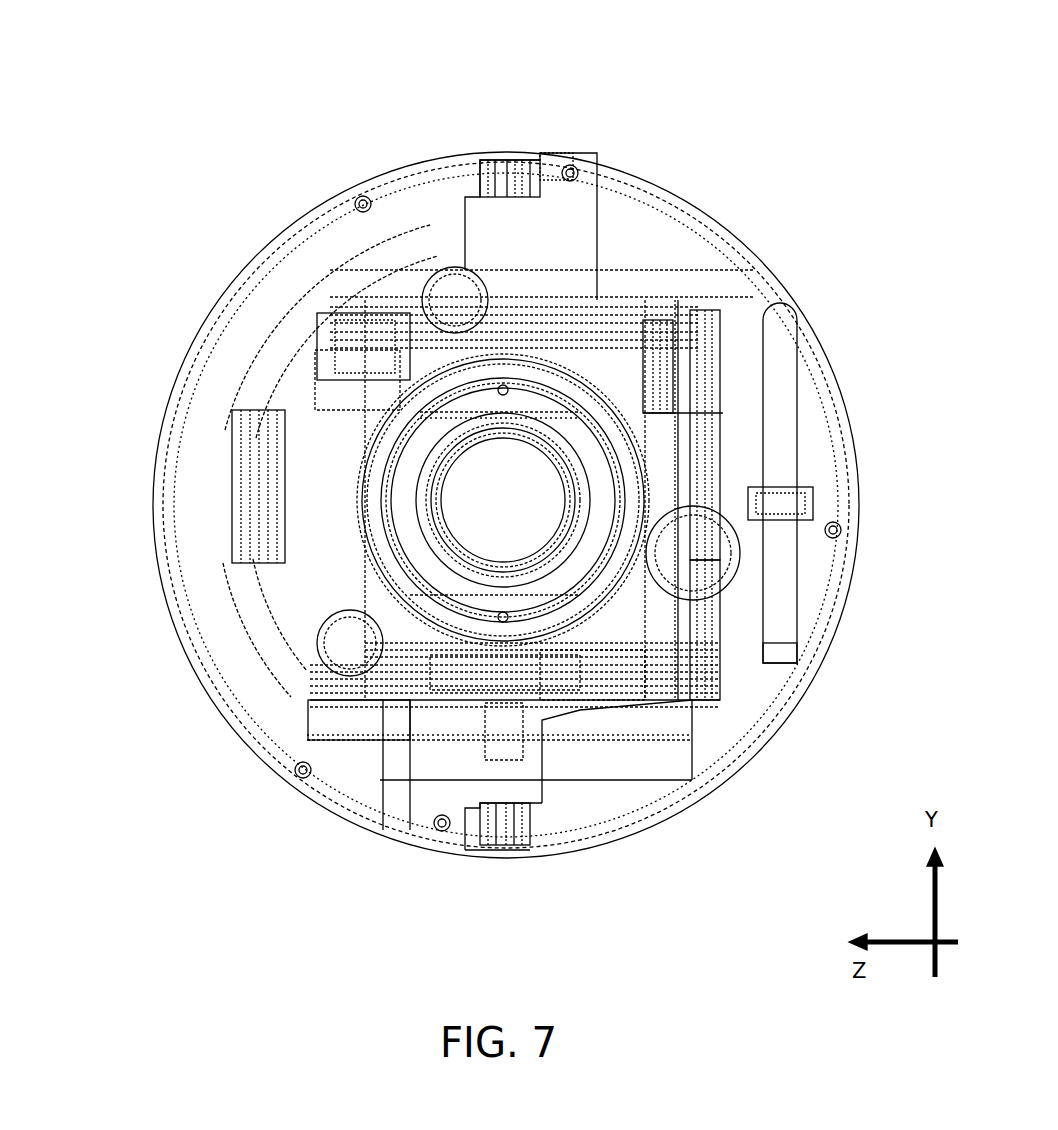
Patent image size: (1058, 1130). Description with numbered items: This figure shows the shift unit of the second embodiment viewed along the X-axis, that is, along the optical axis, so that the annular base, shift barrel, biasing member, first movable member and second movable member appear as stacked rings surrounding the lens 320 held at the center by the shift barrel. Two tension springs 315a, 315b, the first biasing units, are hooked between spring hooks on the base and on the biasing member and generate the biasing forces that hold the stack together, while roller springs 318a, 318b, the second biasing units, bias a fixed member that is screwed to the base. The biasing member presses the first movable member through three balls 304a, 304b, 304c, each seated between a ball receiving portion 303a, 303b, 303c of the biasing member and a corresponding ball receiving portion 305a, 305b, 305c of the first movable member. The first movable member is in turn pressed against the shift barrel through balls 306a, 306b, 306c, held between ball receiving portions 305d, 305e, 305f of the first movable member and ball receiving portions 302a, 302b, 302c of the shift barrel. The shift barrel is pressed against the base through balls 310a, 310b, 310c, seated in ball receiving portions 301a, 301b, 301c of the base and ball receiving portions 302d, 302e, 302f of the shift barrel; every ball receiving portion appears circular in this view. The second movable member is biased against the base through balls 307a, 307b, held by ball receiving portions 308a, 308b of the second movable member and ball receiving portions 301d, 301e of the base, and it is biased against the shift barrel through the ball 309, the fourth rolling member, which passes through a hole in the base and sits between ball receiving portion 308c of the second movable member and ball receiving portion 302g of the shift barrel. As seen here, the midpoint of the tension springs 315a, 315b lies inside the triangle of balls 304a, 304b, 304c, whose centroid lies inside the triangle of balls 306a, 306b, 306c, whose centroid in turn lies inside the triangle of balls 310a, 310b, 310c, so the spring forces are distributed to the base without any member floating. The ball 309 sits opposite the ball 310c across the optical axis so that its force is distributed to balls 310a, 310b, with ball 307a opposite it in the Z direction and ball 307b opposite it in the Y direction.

The lens 320 is at (473, 503).
The ball 310a is at (389, 172).
The ball receiving portion 302d is at (389, 172).
The ball receiving portion 301a is at (452, 313).
The ball 306b is at (295, 232).
The ball receiving portion 305e is at (295, 232).
The ball receiving portion 302b is at (417, 330).
The ball 307a is at (221, 298).
The ball receiving portion 301d is at (221, 298).
The ball receiving portion 308a is at (362, 370).
The ball 304c is at (167, 452).
The ball receiving portion 303c is at (167, 452).
The ball receiving portion 305c is at (258, 493).
The ball 310c is at (244, 701).
The ball receiving portion 302f is at (244, 701).
The ball receiving portion 301c is at (363, 643).
The roller spring 318b is at (503, 620).
The ball 306c is at (451, 798).
The ball receiving portion 305f is at (451, 798).
The ball receiving portion 302c is at (503, 677).
The tension spring 315a is at (513, 832).
The ball 307b is at (642, 778).
The ball receiving portion 301e is at (642, 778).
The ball receiving portion 308b is at (587, 660).
The ball 304b is at (782, 702).
The ball receiving portion 303b is at (782, 702).
The ball receiving portion 305b is at (702, 622).
The ball 310b is at (795, 588).
The ball receiving portion 302e is at (795, 588).
The ball receiving portion 301b is at (703, 557).
The ball 304a is at (817, 387).
The ball receiving portion 303a is at (817, 387).
The ball receiving portion 305a is at (703, 390).
The ball 309 is at (785, 239).
The ball receiving portion 302g is at (785, 239).
The ball receiving portion 308c is at (668, 360).
The ball 306a is at (554, 199).
The ball receiving portion 305d is at (554, 199).
The ball receiving portion 302a is at (600, 330).
The roller spring 318a is at (503, 390).
The tension spring 315b is at (493, 187).